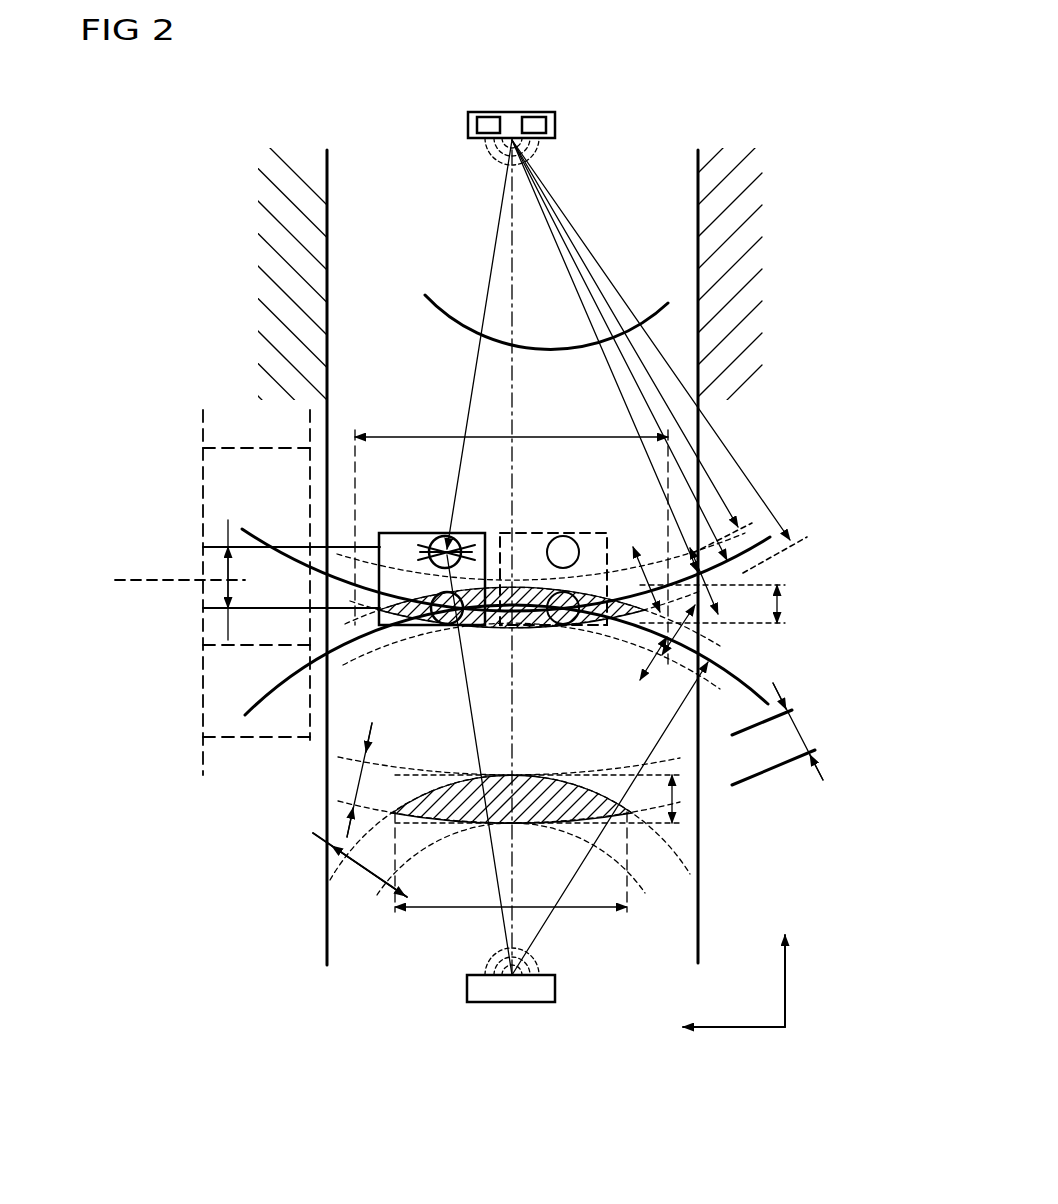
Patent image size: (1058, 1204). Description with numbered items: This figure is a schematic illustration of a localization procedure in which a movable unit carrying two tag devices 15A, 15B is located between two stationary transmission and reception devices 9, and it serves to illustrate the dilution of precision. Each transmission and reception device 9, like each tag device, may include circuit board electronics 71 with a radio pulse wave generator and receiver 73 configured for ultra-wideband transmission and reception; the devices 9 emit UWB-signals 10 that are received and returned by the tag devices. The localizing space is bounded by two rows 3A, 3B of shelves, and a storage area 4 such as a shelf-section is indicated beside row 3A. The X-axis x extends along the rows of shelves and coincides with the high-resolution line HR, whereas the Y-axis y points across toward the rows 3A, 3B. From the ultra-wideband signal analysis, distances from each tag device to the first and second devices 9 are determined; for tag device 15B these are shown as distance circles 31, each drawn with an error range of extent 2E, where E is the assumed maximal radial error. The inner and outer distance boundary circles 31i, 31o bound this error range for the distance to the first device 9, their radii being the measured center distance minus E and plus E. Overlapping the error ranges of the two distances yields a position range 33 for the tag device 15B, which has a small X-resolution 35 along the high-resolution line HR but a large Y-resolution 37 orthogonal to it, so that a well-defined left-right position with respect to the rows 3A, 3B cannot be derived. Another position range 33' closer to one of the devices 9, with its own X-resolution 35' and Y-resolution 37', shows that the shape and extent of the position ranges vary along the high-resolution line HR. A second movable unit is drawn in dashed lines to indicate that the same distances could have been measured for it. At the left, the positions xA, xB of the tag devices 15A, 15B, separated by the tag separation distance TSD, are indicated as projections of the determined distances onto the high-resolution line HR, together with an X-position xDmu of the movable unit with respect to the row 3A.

The transmission and reception device 9 is at (546, 112).
The circuit board electronics 71 is at (488, 112).
The radio pulse wave generator and receiver 73 is at (528, 112).
The row of shelves 3A is at (331, 191).
The row of shelves 3B is at (694, 192).
The high-resolution line HR is at (508, 236).
The UWB-signals 10 is at (531, 338).
The distance circles 31 is at (722, 575).
The inner distance boundary circle 31i is at (763, 508).
The outer distance boundary circle 31o is at (808, 547).
The position range 33 is at (516, 638).
The position range 33' is at (536, 778).
The X-resolution 35 is at (742, 611).
The height of second measurement zone 35' is at (585, 808).
The Y-resolution 37 is at (511, 515).
The width of second measurement zone 37' is at (511, 862).
The tag device 15A is at (440, 533).
The tag device 15B is at (448, 630).
The storage area 4 is at (208, 632).
The maximal radial error E is at (668, 585).
The error range extent 2E is at (353, 790).
The tag separation distance TSD is at (232, 565).
The position xA is at (275, 547).
The position xB is at (275, 610).
The X-position of the movable unit xDmu is at (145, 582).
The X-axis x is at (798, 978).
The Y-axis y is at (734, 1045).